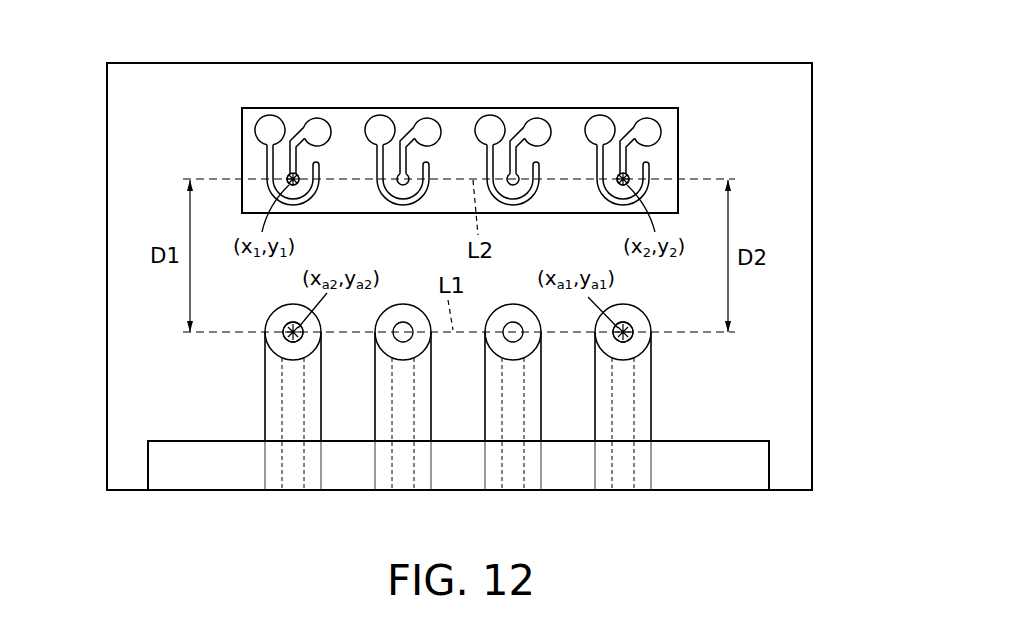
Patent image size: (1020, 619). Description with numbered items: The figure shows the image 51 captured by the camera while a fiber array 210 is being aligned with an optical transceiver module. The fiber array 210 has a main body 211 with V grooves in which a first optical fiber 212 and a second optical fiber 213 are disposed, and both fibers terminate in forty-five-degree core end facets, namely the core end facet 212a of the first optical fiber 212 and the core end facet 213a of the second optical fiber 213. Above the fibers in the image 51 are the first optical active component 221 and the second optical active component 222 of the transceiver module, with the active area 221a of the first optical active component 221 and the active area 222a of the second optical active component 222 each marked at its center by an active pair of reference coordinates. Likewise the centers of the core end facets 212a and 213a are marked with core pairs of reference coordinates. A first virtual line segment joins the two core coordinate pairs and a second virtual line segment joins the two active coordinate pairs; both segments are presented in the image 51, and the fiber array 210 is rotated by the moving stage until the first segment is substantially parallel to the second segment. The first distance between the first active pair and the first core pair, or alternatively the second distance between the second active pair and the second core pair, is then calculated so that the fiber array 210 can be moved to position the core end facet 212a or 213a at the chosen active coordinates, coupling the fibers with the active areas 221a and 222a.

The image 51 is at (812, 140).
The fiber array 210 is at (138, 444).
The main body 211 is at (188, 458).
The first optical fiber 212 is at (265, 403).
The core end facet 212a is at (286, 329).
The second optical fiber 213 is at (651, 409).
The core end facet 213a is at (631, 327).
The first optical active component 221 is at (294, 92).
The active area 221a is at (289, 175).
The second optical active component 222 is at (624, 92).
The active area 222a is at (627, 175).